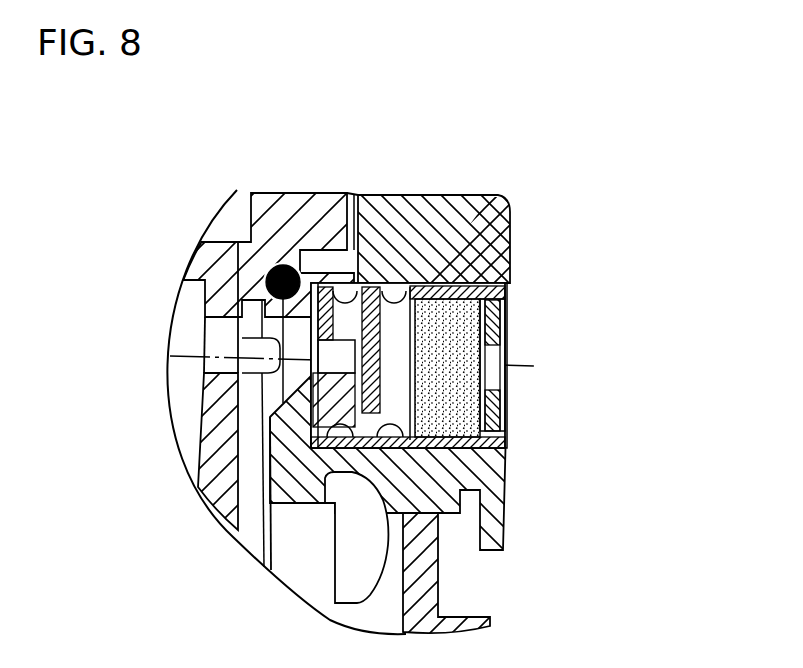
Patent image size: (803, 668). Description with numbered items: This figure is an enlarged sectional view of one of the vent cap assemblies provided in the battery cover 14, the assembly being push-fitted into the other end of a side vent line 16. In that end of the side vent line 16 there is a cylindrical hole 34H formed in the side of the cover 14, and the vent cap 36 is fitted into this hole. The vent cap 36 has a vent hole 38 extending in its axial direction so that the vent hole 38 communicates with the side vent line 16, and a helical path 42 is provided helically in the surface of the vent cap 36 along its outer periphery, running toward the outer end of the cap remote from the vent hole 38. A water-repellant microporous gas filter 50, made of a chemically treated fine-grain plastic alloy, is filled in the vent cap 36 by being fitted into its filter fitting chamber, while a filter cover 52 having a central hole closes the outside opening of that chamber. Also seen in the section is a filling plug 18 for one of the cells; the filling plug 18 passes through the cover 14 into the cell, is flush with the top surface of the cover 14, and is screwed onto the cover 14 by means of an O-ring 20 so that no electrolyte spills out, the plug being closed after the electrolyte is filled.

The cover 14 is at (351, 196).
The side vent line 16 is at (218, 340).
The filling plug 18 is at (197, 268).
The O-ring 20 is at (269, 266).
The cylindrical hole 34H is at (510, 290).
The vent cap 36 is at (430, 286).
The vent hole 38 is at (296, 405).
The helical path 42 is at (388, 425).
The water-repellant microporous gas filter 50 is at (460, 353).
The filter cover 52 is at (493, 397).